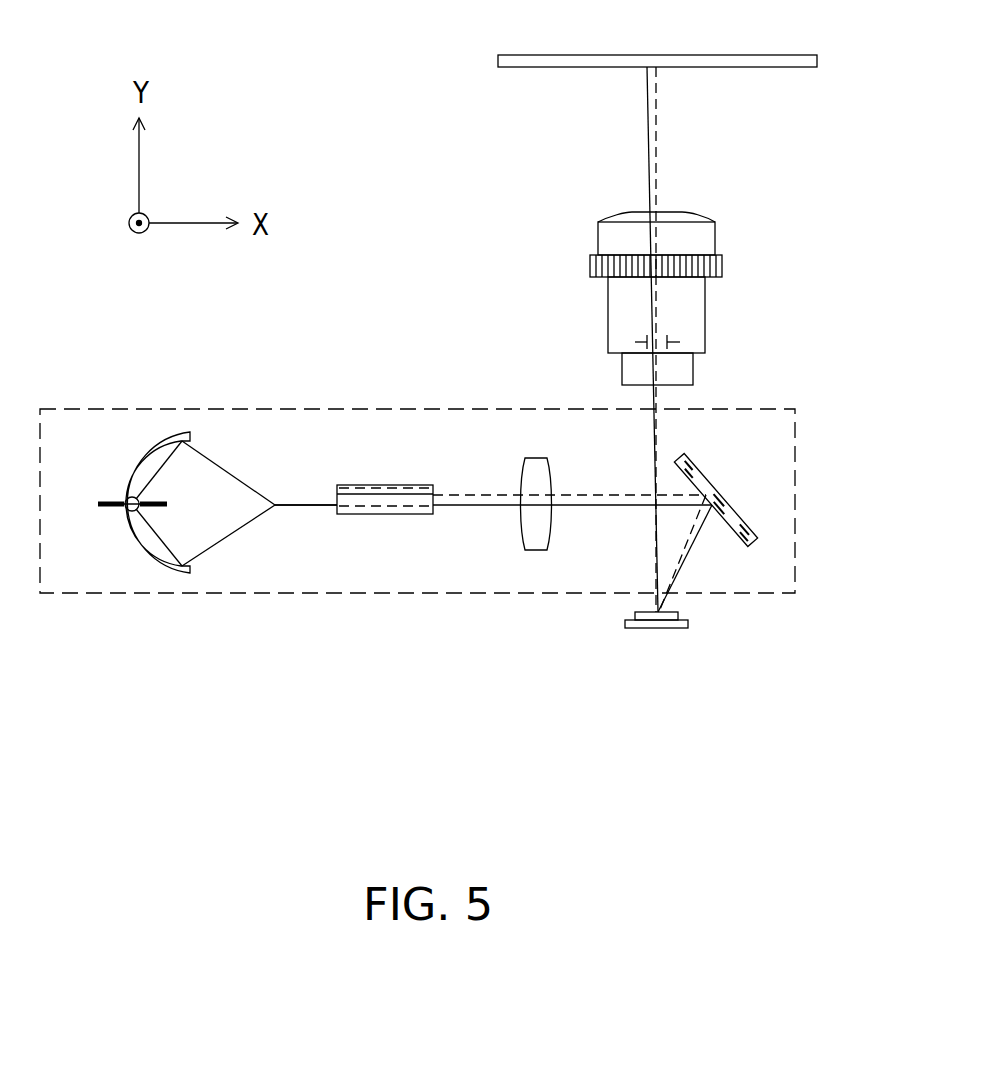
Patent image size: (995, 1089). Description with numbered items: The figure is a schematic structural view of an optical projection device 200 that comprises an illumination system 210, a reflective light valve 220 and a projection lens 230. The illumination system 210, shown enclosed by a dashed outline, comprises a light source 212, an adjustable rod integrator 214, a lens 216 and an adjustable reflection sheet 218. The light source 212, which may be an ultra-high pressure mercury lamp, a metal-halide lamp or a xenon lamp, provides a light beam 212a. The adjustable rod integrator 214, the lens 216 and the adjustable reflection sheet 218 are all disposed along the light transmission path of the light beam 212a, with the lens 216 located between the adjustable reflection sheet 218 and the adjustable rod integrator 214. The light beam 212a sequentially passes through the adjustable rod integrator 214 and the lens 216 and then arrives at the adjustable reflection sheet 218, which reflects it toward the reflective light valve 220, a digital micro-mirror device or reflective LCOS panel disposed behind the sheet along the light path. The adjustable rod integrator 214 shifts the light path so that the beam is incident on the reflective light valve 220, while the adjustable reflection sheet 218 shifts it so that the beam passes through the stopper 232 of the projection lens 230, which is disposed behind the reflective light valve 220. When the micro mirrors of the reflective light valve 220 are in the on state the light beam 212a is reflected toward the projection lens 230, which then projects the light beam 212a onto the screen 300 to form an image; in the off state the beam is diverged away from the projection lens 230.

The optical projection device 200 is at (470, 733).
The illumination system 210 is at (201, 409).
The light source 212 is at (132, 497).
The light beam 212a is at (293, 506).
The adjustable rod integrator 214 is at (377, 498).
The lens 216 is at (537, 468).
The adjustable reflection sheet 218 is at (698, 472).
The reflective light valve 220 is at (663, 628).
The projection lens 230 is at (698, 298).
The stopper 232 is at (645, 338).
The screen 300 is at (498, 60).